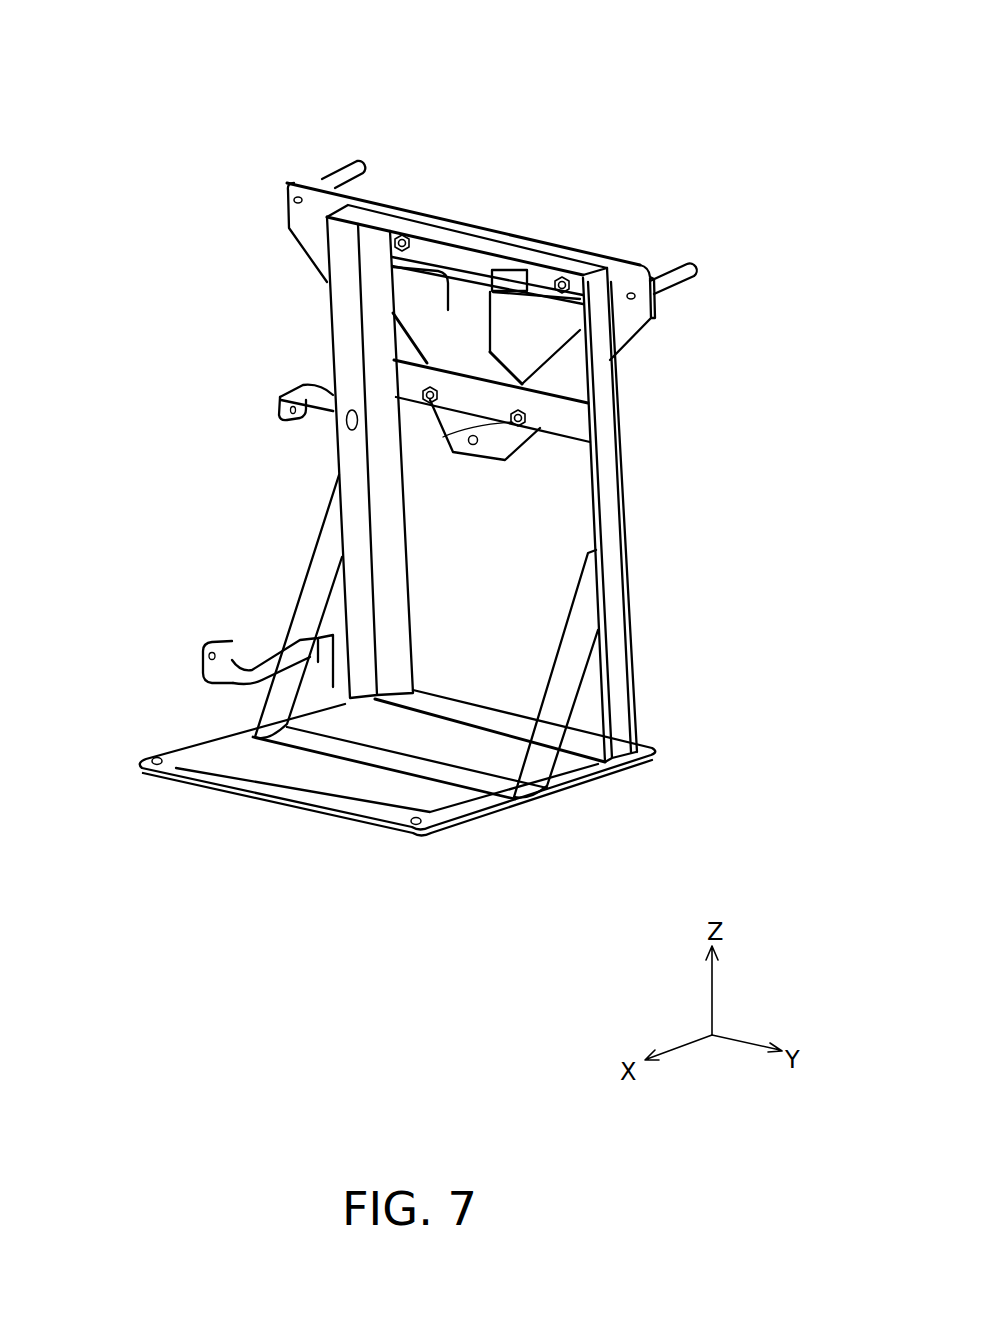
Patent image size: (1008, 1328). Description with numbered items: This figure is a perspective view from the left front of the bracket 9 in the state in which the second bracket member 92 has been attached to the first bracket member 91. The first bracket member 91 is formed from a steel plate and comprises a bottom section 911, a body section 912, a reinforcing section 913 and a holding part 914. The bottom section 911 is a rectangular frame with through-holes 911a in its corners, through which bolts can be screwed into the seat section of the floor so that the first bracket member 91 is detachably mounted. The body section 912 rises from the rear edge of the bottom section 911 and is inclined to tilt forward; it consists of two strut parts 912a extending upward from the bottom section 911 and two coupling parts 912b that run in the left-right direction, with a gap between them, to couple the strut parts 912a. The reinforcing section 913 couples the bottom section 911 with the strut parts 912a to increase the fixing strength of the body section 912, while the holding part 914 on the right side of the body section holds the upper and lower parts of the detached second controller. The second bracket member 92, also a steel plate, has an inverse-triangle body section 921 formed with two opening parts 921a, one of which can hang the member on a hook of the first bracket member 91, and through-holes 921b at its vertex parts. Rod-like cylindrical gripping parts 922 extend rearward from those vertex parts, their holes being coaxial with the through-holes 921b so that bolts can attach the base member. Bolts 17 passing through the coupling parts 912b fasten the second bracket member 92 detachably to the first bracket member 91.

The bracket 9 is at (594, 100).
The first bracket member 91 is at (661, 480).
The bottom section 911 is at (303, 795).
The through-holes 911a is at (157, 757).
The body section 912 is at (640, 548).
The strut parts 912a is at (392, 554).
The coupling parts 912b is at (476, 250).
The reinforcing section 913 is at (318, 583).
The holding part 914 is at (278, 403).
The second bracket member 92 is at (632, 250).
The body section 921 is at (633, 329).
The opening parts 921a is at (520, 334).
The through-holes 921b is at (297, 204).
The gripping parts 922 is at (345, 170).
The bolts 17 is at (400, 235).